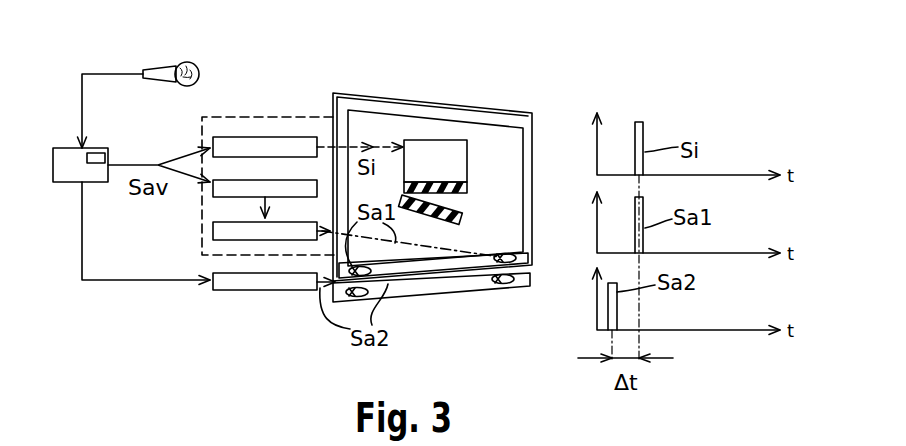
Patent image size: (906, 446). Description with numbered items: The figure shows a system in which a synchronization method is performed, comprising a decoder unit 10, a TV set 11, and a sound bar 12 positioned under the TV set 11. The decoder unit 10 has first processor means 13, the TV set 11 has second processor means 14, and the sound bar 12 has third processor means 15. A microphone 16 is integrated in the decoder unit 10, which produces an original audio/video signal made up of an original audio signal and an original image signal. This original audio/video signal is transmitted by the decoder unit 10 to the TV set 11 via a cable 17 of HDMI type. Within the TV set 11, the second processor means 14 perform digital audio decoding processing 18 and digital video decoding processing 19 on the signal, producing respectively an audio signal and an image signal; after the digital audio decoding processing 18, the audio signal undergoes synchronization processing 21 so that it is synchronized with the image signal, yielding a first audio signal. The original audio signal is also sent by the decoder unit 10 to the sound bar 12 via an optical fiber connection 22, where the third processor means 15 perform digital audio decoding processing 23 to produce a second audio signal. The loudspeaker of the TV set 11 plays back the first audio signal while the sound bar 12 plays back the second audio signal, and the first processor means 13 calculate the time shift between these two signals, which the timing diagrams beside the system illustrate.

The decoder unit 10 is at (61, 158).
The TV set 11 is at (438, 142).
The sound bar 12 is at (424, 291).
The first processor means 13 is at (98, 152).
The second processor means 14 is at (291, 117).
The third processor means 15 is at (275, 287).
The microphone 16 is at (172, 66).
The cable 17 is at (150, 165).
The digital audio decoding processing 18 is at (220, 195).
The digital video decoding processing 19 is at (258, 142).
The synchronization processing 21 is at (219, 231).
The optical fiber connection 22 is at (78, 236).
The digital audio decoding processing 23 is at (243, 285).